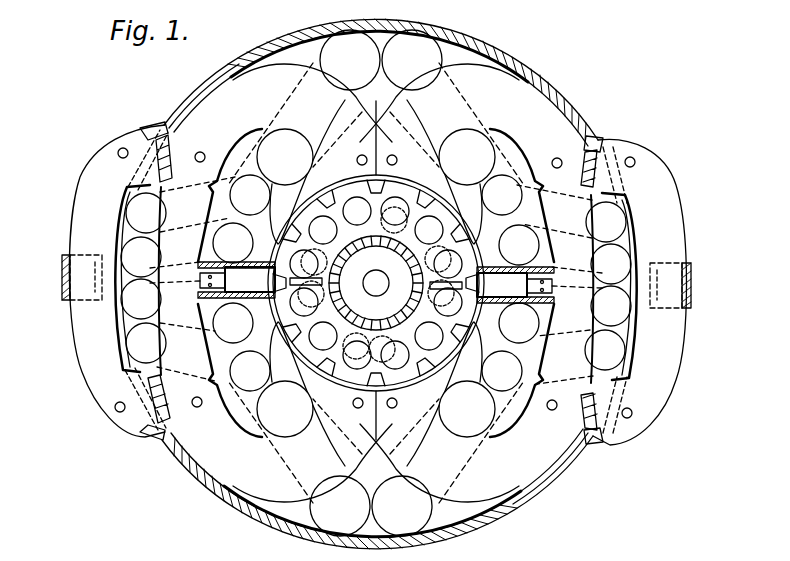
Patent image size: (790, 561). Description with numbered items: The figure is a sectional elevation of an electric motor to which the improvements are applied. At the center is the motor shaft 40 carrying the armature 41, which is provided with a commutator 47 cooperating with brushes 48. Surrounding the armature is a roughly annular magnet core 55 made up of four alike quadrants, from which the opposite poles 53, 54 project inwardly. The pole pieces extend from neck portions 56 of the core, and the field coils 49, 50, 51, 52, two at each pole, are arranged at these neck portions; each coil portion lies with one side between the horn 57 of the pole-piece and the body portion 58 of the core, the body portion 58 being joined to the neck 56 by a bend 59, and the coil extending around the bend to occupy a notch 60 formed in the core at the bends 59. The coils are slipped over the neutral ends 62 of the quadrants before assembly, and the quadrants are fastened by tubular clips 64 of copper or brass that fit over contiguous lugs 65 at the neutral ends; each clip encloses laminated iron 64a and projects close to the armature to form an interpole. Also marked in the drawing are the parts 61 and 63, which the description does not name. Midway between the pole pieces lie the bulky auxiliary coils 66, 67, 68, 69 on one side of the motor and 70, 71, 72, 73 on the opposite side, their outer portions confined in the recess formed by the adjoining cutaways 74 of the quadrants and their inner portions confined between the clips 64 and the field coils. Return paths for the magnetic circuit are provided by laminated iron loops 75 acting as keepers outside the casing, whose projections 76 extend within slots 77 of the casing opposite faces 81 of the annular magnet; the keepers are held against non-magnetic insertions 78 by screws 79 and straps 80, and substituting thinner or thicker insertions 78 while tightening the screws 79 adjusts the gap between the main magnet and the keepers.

The motor shaft 40 is at (386, 278).
The armature 41 is at (376, 283).
The commutator 47 is at (365, 332).
The brushes 48 is at (438, 285).
The field coil 49 is at (467, 157).
The field coil 50 is at (285, 157).
The field coil 51 is at (467, 409).
The field coil 52 is at (285, 409).
The pole 53 is at (388, 182).
The pole 54 is at (347, 384).
The magnet core 55 is at (268, 80).
The neck portion 56 is at (395, 160).
The horn 57 is at (360, 124).
The body portion 58 is at (385, 283).
The bend 59 is at (376, 283).
The notch 60 is at (350, 447).
The pin 61 is at (358, 163).
The neutral end 62 is at (195, 287).
The housing ring 63 is at (197, 92).
The tubular clip 64 is at (246, 327).
The laminated iron 64a is at (261, 262).
The lug 65 is at (226, 280).
The auxiliary coil 66 is at (611, 306).
The auxiliary coil 67 is at (611, 264).
The auxiliary coil 68 is at (606, 222).
The auxiliary coil 69 is at (605, 350).
The auxiliary coil 70 is at (146, 343).
The auxiliary coil 71 is at (146, 213).
The auxiliary coil 72 is at (141, 257).
The auxiliary coil 73 is at (141, 299).
The cutaway 74 is at (163, 238).
The laminated iron loop 75 is at (80, 217).
The projection 76 is at (637, 203).
The slot 77 is at (637, 328).
The non-magnetic insertion 78 is at (158, 397).
The screw 79 is at (93, 294).
The strap 80 is at (62, 285).
The face 81 is at (171, 151).